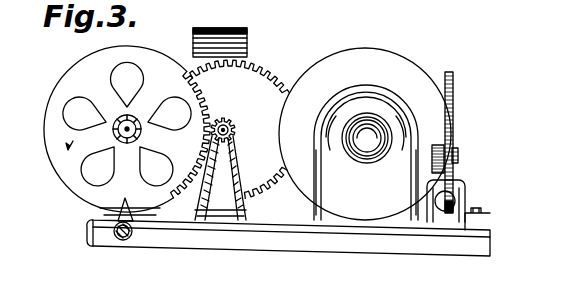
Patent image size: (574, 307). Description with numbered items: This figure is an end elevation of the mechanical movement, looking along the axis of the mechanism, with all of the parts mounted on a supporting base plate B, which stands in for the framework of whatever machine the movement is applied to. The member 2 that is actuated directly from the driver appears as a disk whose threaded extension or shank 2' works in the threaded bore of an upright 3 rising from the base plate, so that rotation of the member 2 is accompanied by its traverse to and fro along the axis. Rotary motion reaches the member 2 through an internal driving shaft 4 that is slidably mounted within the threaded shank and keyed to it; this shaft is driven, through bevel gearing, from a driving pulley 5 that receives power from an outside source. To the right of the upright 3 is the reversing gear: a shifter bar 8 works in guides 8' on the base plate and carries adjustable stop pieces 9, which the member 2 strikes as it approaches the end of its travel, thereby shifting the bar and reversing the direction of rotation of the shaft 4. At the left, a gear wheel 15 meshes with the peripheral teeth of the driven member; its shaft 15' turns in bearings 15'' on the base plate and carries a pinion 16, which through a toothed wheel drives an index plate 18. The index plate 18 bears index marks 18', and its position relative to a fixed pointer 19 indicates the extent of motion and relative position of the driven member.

The supporting base plate B is at (368, 242).
The index plate 18 is at (113, 130).
The index marks 18' is at (85, 178).
The driving pulley 5 is at (258, 24).
The fixed pointer 19 is at (119, 236).
The gear wheel 15 is at (239, 120).
The shaft of gear wheel 15' is at (243, 127).
The bearings 15'' is at (262, 164).
The pinion 16 is at (226, 124).
The member directly actuated from the driver 2 is at (365, 128).
The threaded extension or shank 2' is at (351, 152).
The internal driving shaft 4 is at (367, 119).
The upright 3 is at (336, 186).
The stop pieces 9 is at (433, 200).
The guides 8' is at (460, 196).
The shifter bar 8 is at (468, 202).